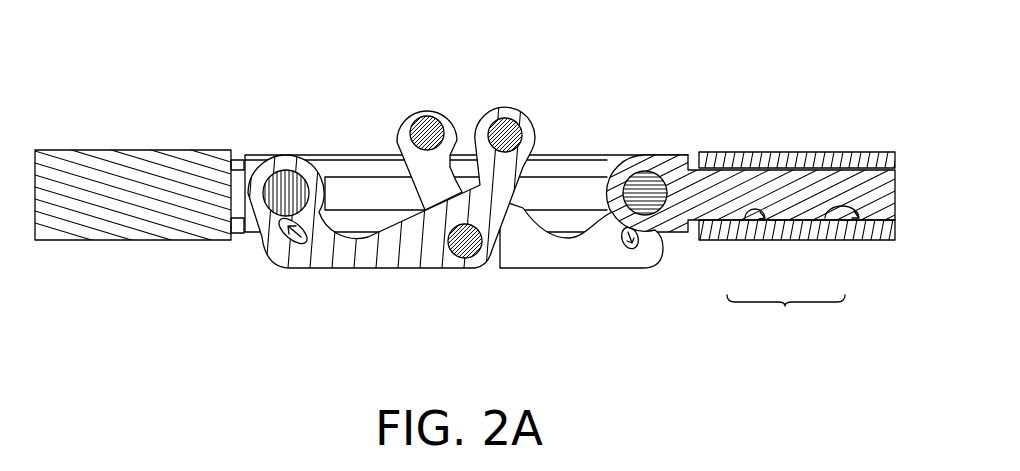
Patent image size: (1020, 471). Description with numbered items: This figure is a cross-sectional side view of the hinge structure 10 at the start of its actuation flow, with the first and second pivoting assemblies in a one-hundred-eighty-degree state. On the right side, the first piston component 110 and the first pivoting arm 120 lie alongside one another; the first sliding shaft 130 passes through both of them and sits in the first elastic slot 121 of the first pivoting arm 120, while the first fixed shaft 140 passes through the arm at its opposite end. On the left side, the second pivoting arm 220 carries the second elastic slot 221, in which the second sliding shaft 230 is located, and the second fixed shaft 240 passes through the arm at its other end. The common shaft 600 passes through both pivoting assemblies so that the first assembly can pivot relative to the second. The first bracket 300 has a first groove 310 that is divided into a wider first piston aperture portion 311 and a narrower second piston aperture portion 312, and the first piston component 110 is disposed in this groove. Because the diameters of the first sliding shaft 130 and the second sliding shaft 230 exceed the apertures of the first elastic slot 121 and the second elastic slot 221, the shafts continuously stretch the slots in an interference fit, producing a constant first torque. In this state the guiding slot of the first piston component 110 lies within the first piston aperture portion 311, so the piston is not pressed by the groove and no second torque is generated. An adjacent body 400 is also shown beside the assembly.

The hinge structure 10 is at (897, 354).
The first piston component 110 is at (765, 190).
The first pivoting arm 120 is at (575, 258).
The first elastic slot 121 is at (658, 240).
The first sliding shaft 130 is at (645, 178).
The first fixed shaft 140 is at (428, 112).
The second pivoting arm 220 is at (397, 248).
The second elastic slot 221 is at (300, 242).
The second sliding shaft 230 is at (290, 165).
The second fixed shaft 240 is at (500, 115).
The first bracket 300 is at (798, 197).
The first groove 310 is at (786, 319).
The first piston aperture portion 311 is at (823, 222).
The second piston aperture portion 312 is at (767, 220).
The first body 400 is at (125, 210).
The common shaft 600 is at (465, 250).